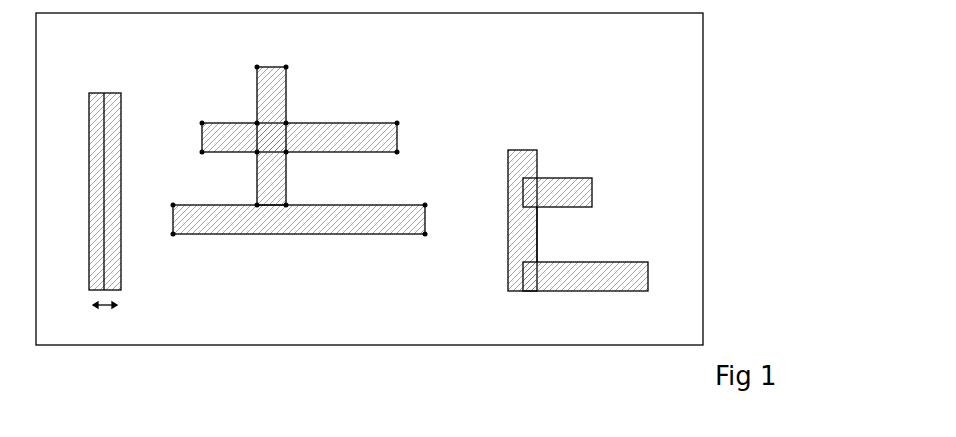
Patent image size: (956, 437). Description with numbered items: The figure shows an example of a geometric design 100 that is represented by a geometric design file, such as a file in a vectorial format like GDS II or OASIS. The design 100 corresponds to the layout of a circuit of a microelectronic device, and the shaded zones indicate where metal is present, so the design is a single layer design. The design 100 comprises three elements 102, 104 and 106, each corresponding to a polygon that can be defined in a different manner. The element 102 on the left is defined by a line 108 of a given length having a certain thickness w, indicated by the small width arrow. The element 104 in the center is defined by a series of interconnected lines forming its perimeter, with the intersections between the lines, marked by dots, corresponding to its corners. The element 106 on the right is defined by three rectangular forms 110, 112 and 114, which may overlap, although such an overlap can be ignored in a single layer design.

The geometric design 100 is at (703, 59).
The element 102 is at (118, 192).
The element 104 is at (286, 97).
The element 106 is at (595, 201).
The line 108 is at (103, 178).
The rectangular form 110 is at (537, 232).
The rectangular form 112 is at (592, 187).
The rectangular form 114 is at (632, 262).